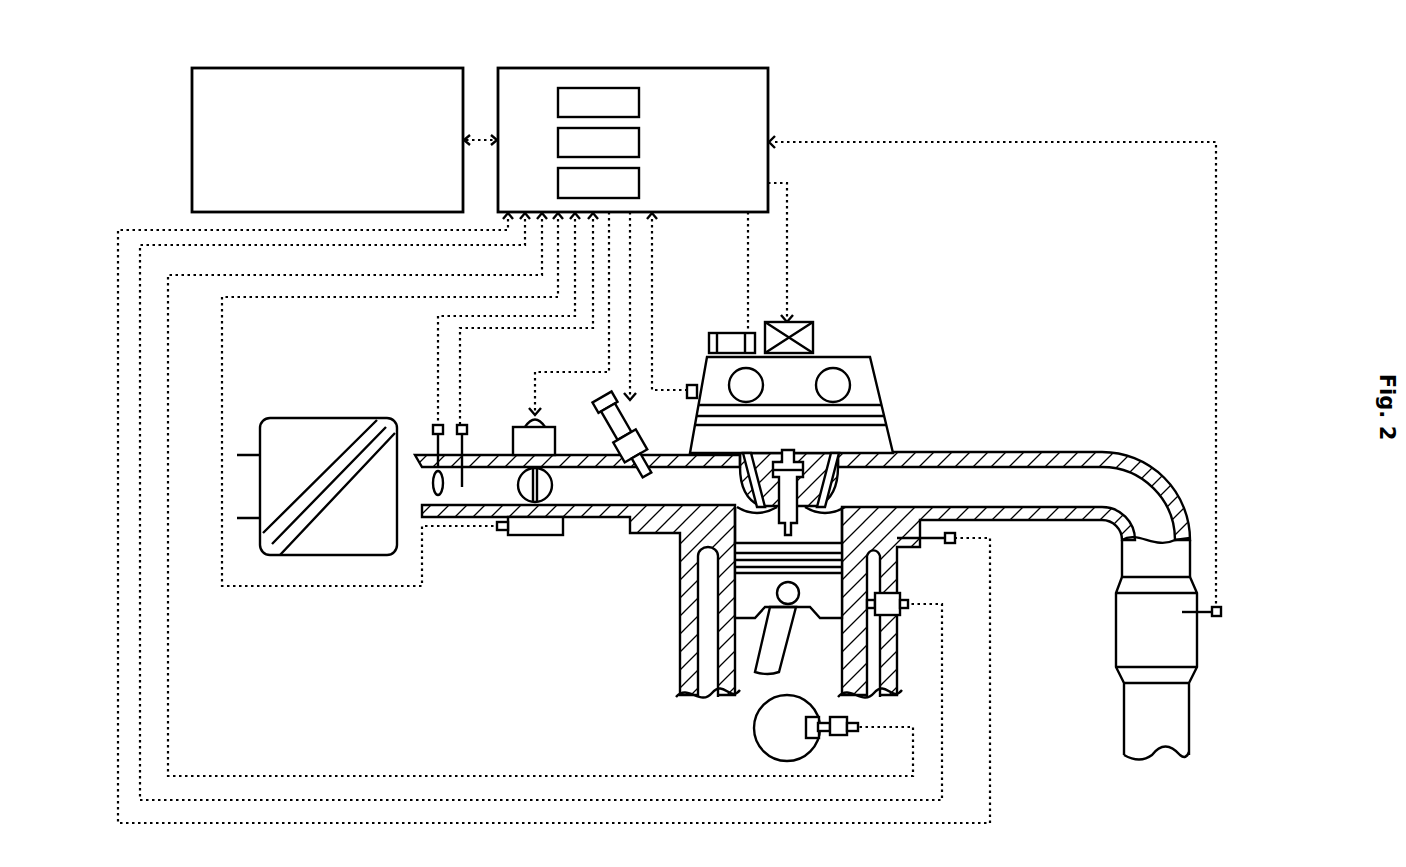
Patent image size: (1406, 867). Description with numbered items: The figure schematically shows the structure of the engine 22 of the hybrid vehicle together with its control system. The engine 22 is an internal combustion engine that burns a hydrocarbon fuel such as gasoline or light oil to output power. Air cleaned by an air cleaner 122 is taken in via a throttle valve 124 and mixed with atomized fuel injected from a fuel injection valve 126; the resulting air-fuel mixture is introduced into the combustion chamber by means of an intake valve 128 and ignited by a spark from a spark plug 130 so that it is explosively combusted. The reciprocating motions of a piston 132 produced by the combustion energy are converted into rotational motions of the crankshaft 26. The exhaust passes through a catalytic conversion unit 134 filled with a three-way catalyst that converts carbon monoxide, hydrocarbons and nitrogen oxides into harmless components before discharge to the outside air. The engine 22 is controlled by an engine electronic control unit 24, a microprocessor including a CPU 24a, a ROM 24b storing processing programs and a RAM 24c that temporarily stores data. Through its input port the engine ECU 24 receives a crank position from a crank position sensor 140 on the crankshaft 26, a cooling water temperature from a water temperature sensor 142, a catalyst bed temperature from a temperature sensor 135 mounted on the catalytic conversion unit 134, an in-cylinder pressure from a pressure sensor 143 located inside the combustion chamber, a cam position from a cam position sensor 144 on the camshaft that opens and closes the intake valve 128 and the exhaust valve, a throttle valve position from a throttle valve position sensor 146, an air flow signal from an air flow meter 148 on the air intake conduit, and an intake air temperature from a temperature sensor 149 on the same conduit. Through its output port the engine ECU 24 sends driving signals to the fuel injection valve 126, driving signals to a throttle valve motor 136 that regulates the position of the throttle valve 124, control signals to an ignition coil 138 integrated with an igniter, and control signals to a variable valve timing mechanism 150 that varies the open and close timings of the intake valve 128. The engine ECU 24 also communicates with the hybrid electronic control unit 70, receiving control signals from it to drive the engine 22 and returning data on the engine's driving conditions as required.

The hybrid electronic control unit 70 is at (327, 68).
The engine electronic control unit 24 is at (634, 68).
The CPU 24a is at (640, 102).
The ROM 24b is at (640, 142).
The RAM 24c is at (640, 183).
The engine 22 is at (843, 300).
The air cleaner 122 is at (328, 418).
The throttle valve 124 is at (561, 456).
The fuel injection valve 126 is at (603, 457).
The intake valve 128 is at (757, 520).
The spark plug 130 is at (822, 514).
The piston 132 is at (753, 592).
The catalytic conversion unit 134 is at (1128, 613).
The temperature sensor 135 is at (1218, 618).
The throttle valve motor 136 is at (515, 427).
The ignition coil 138 is at (815, 340).
The crank position sensor 140 is at (842, 737).
The water temperature sensor 142 is at (900, 598).
The pressure sensor 143 is at (957, 530).
The cam position sensor 144 is at (688, 388).
The throttle valve position sensor 146 is at (533, 537).
The air flow meter 148 is at (433, 427).
The temperature sensor 149 is at (462, 425).
The variable valve timing mechanism 150 is at (882, 400).
The crankshaft 26 is at (755, 729).